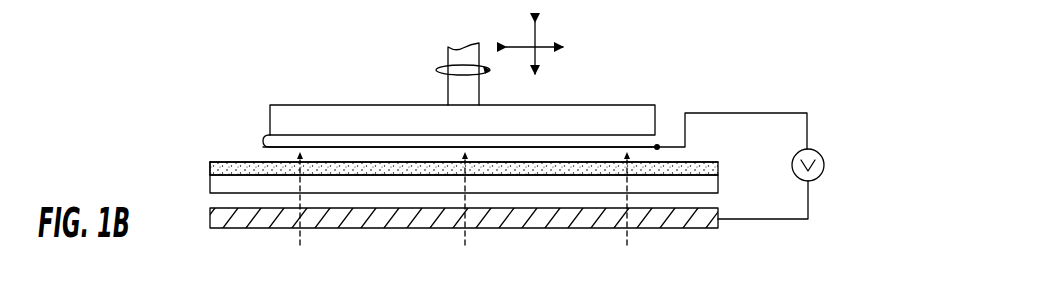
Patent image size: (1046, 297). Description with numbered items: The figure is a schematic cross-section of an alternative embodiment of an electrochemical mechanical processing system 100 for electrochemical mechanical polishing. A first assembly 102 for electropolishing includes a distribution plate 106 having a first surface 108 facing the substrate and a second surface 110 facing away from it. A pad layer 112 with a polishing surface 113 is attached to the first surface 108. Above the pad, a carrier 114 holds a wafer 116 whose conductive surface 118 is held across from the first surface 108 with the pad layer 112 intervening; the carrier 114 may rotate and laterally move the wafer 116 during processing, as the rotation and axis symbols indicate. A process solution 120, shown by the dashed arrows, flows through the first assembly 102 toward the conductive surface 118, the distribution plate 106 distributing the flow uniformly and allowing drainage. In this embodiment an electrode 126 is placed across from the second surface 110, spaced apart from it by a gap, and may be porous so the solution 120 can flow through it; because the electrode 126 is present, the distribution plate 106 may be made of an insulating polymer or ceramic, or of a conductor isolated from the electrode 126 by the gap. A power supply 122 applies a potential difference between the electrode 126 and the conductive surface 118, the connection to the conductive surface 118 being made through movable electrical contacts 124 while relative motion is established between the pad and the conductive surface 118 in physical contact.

The electrochemical mechanical processing system 100 is at (656, 68).
The first assembly 102 is at (180, 178).
The distribution plate 106 is at (208, 183).
The first surface 108 is at (240, 174).
The second surface 110 is at (262, 195).
The pad layer 112 is at (209, 170).
The polishing surface 113 is at (257, 162).
The carrier 114 is at (375, 113).
The wafer 116 is at (602, 142).
The conductive surface 118 is at (549, 149).
The process solution 120 is at (463, 207).
The power supply 122 is at (816, 152).
The movable electrical contacts 124 is at (658, 146).
The electrode 126 is at (710, 229).